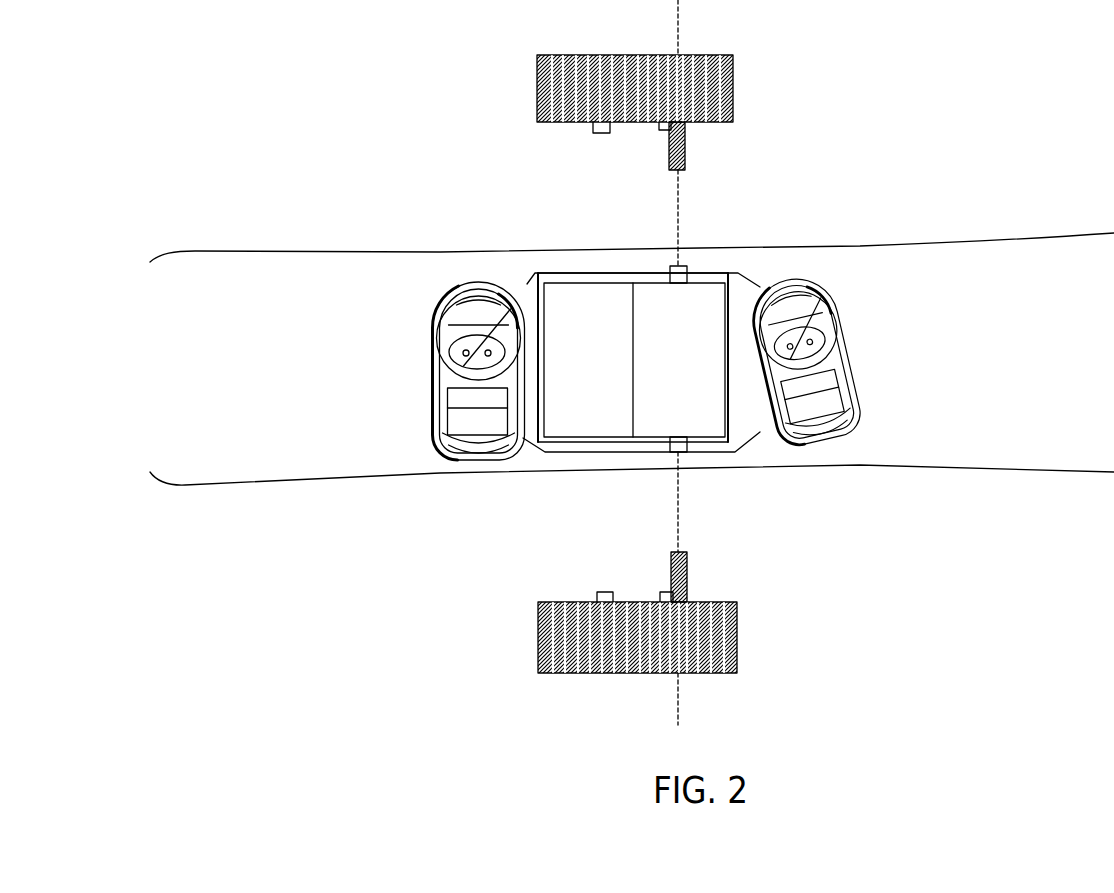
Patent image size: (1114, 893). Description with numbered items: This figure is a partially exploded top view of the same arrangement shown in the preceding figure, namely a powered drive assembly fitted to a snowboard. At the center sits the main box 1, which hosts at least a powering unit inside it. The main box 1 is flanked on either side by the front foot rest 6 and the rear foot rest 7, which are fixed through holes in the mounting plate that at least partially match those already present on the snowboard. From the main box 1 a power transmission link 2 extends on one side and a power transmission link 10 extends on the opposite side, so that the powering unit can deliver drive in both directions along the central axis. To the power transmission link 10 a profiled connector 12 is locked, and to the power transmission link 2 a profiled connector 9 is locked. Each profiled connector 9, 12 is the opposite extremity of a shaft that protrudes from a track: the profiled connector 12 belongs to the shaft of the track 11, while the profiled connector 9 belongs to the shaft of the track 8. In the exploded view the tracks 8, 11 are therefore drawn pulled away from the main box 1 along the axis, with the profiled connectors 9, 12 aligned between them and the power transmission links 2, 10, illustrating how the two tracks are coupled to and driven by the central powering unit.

The main box 1 is at (587, 305).
The power transmission link 2 is at (688, 452).
The front foot rest 6 is at (468, 285).
The rear foot rest 7 is at (803, 285).
The track 8 is at (737, 638).
The profiled connector 9 is at (692, 578).
The power transmission link 10 is at (681, 270).
The track 11 is at (735, 93).
The profiled connector 12 is at (685, 158).